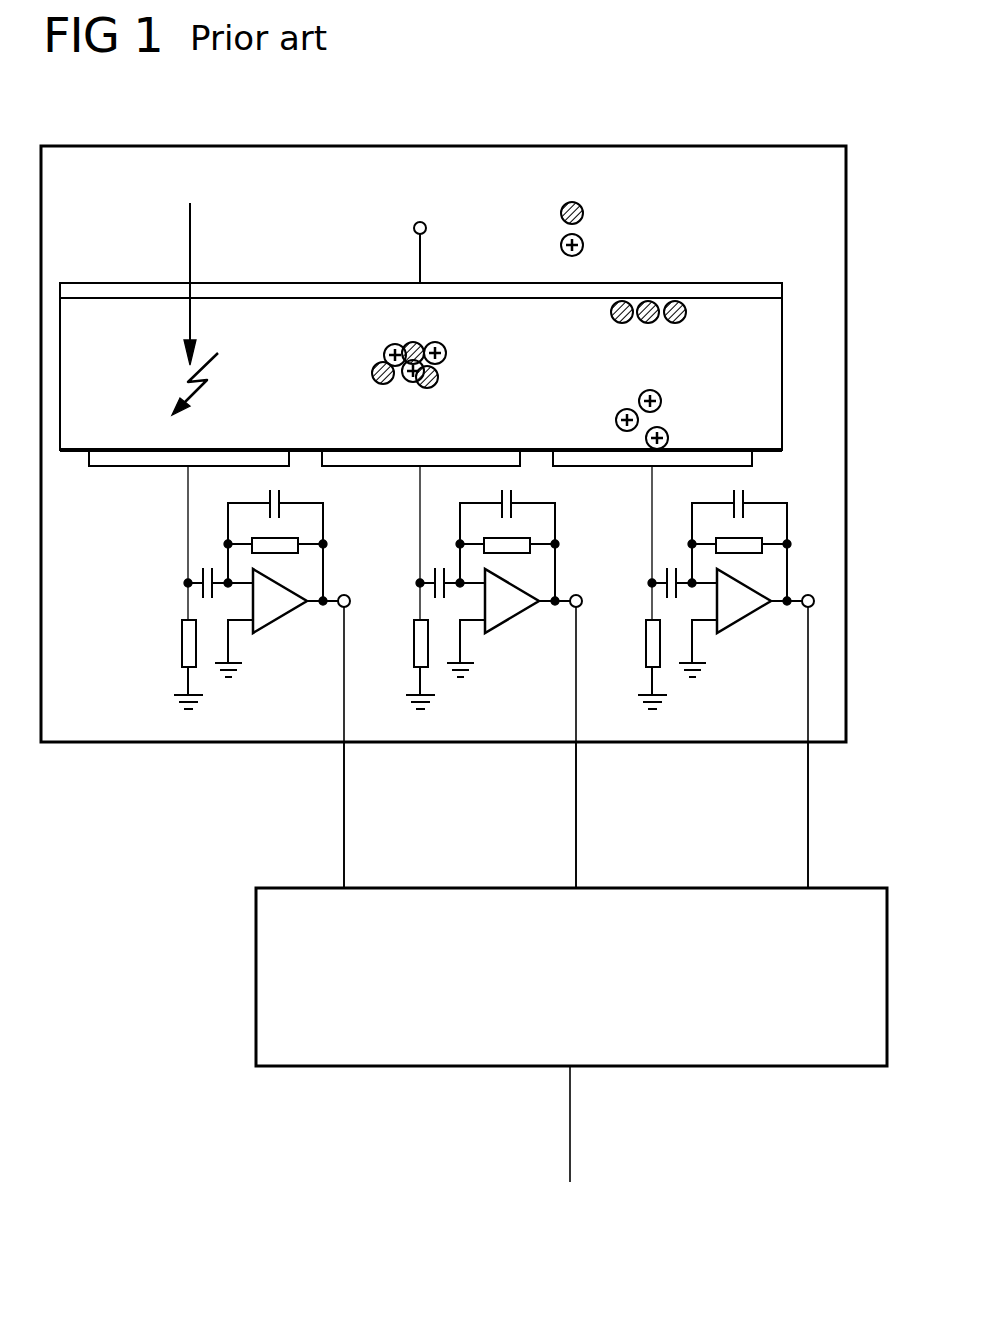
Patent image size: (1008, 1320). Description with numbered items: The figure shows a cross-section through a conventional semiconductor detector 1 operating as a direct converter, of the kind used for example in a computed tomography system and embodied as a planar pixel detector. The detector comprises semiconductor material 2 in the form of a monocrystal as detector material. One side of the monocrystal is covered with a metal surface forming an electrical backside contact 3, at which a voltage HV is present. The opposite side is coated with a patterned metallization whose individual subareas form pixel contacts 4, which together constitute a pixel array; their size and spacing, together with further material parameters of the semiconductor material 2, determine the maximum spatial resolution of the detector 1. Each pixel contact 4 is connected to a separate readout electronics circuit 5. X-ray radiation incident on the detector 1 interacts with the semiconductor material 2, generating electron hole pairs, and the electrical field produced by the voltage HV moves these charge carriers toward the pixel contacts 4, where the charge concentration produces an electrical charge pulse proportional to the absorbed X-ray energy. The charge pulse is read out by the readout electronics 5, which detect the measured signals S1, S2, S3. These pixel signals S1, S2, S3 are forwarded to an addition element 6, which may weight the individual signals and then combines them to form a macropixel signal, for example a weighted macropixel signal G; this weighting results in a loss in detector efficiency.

The semiconductor detector 1 is at (768, 118).
The semiconductor material 2 is at (770, 352).
The backside contact 3 is at (294, 289).
The pixel contacts 4 is at (128, 456).
The readout electronics circuits 5 is at (278, 620).
The addition element 6 is at (256, 978).
The voltage HV is at (426, 233).
The measured signal S1 is at (345, 818).
The measured signal S2 is at (577, 818).
The measured signal S3 is at (809, 818).
The weighted macropixel signal G is at (571, 1108).